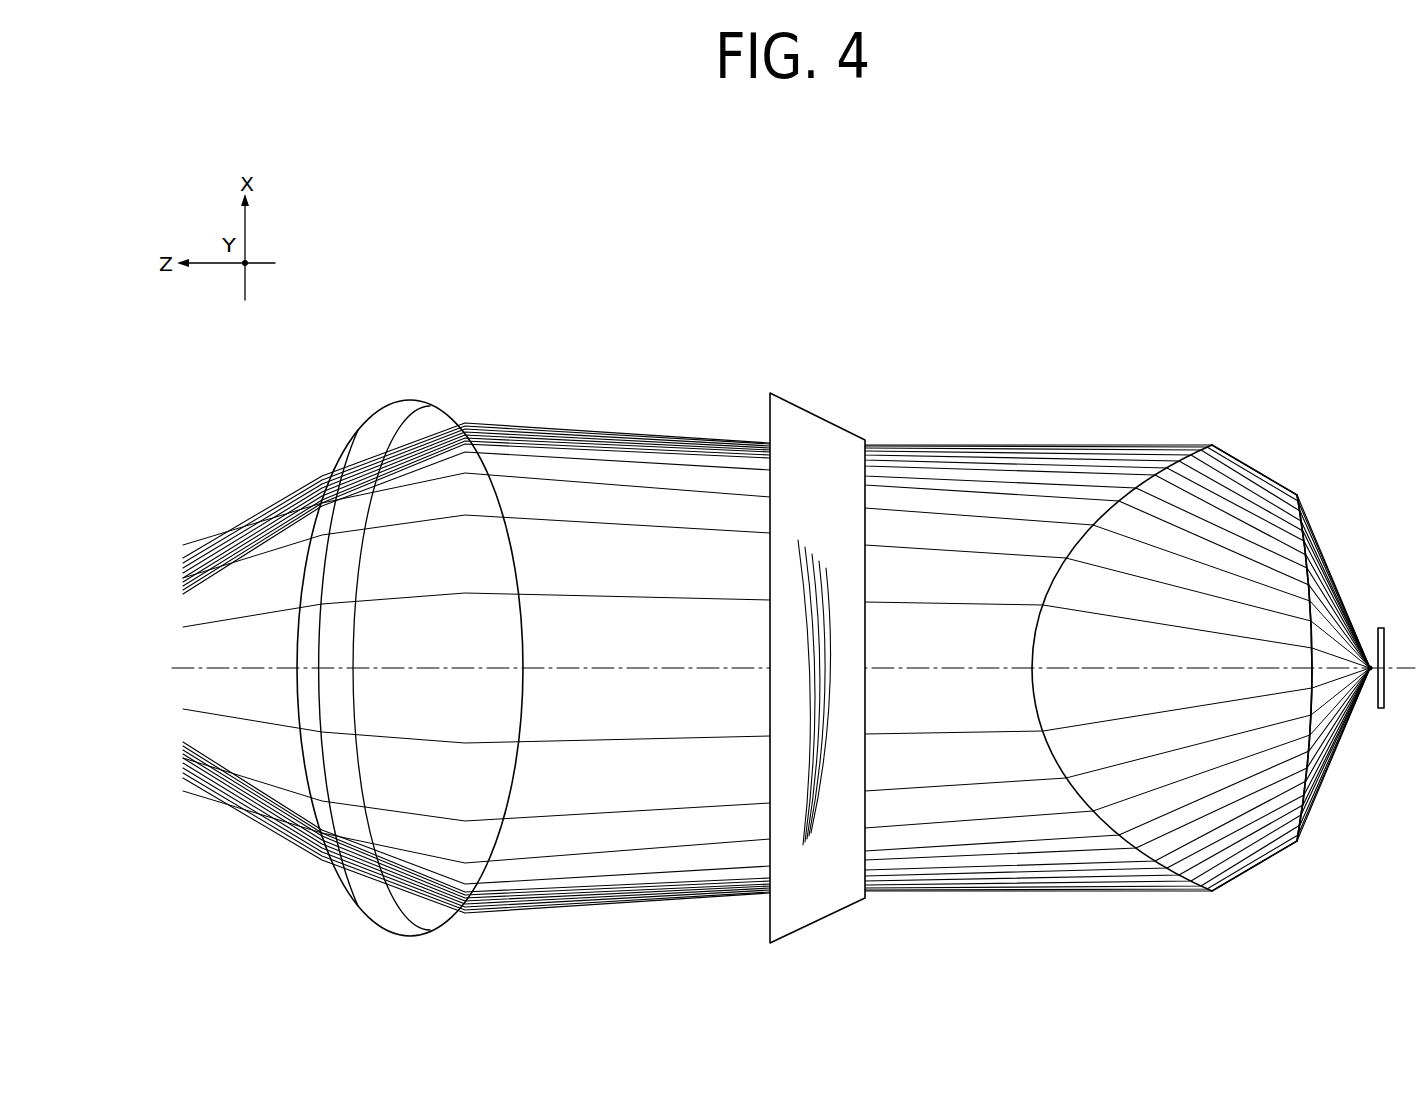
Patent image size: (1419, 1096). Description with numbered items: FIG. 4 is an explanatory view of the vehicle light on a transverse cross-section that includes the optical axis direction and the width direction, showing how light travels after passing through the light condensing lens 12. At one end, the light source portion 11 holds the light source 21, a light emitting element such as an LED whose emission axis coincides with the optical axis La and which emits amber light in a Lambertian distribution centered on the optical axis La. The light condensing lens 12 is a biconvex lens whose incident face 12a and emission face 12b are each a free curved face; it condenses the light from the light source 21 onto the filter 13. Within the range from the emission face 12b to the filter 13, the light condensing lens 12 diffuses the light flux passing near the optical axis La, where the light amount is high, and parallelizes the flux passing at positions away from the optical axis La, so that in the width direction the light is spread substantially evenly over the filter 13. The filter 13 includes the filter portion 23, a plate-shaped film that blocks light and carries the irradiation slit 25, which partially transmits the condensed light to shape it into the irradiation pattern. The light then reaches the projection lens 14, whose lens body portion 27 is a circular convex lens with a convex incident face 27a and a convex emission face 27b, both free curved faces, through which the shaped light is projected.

The light source portion 11 is at (1379, 732).
The light condensing lens 12 is at (1250, 440).
The incident face 12a is at (1308, 628).
The emission face 12b is at (1130, 500).
The filter 13 is at (821, 405).
The filter portion 23 is at (748, 613).
The projection lens 14 is at (428, 390).
The lens body portion 27 is at (402, 635).
The incident face 27a is at (470, 498).
The emission face 27b is at (340, 460).
The irradiation slit 25 is at (792, 632).
The light source 21 is at (1373, 682).
The optical axis La is at (243, 668).